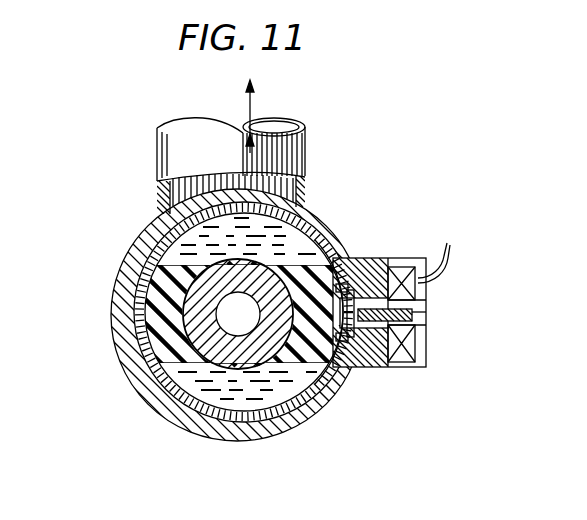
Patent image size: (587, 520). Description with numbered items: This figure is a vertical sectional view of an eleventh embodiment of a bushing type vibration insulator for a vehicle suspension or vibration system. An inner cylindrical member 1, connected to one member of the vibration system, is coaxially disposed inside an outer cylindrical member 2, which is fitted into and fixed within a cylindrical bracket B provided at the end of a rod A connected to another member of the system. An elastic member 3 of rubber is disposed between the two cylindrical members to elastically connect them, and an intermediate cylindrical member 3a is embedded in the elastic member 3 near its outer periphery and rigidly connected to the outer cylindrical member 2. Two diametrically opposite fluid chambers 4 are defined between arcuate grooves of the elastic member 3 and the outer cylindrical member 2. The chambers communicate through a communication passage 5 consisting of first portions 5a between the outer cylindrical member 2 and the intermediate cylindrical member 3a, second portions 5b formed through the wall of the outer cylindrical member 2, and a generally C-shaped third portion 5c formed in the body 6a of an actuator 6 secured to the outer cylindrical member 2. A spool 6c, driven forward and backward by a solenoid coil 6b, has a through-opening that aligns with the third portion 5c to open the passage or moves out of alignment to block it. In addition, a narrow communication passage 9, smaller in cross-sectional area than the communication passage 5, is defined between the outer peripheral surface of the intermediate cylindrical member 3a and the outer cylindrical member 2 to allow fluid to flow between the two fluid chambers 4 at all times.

The inner cylindrical member 1 is at (200, 365).
The outer cylindrical member 2 is at (302, 408).
The elastic member 3 is at (157, 380).
The intermediate cylindrical member 3a is at (140, 248).
The fluid chamber 4 is at (302, 228).
The communication passage 5 is at (360, 276).
The first portion 5a is at (320, 262).
The second portion 5b is at (340, 282).
The third portion 5c is at (387, 362).
The actuator 6 is at (405, 258).
The actuator body 6a is at (412, 262).
The solenoid coil 6b is at (414, 345).
The spool 6c is at (412, 312).
The narrow communication passage 9 is at (142, 305).
The rod A is at (177, 125).
The cylindrical bracket B is at (197, 441).